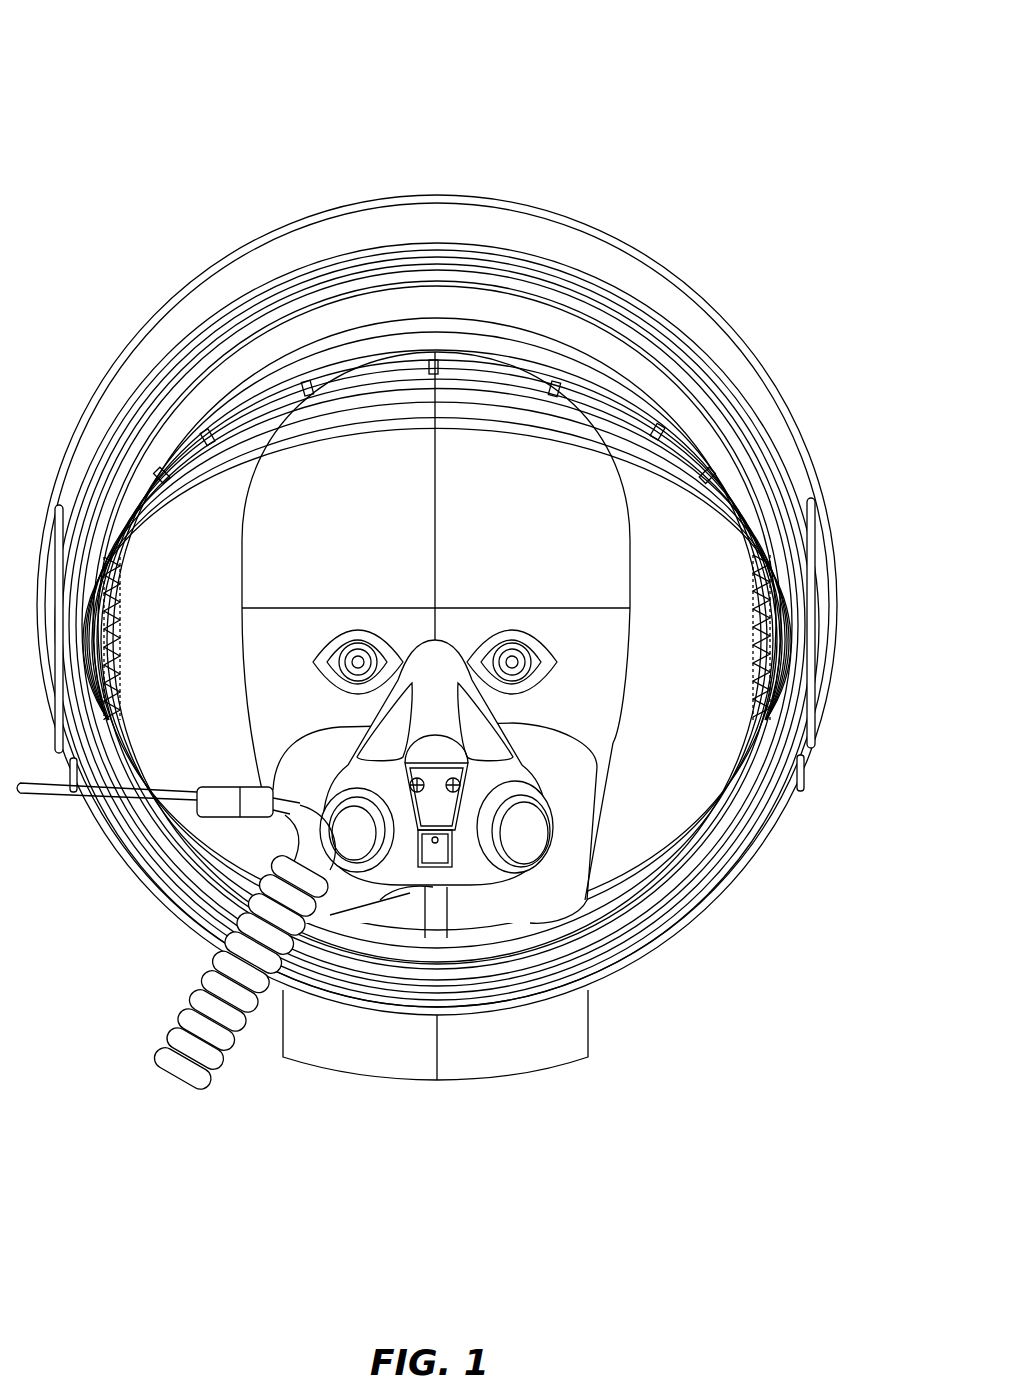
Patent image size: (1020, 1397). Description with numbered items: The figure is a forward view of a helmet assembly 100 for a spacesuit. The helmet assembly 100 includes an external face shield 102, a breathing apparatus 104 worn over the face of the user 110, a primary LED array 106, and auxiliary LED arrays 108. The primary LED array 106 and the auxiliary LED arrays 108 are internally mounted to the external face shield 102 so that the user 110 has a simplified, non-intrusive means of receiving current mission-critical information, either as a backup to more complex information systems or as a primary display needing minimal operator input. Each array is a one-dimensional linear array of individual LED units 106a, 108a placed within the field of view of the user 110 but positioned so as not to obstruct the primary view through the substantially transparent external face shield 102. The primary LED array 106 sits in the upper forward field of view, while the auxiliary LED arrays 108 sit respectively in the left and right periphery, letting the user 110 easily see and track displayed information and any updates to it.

The helmet assembly 100 is at (74, 70).
The external face shield 102 is at (658, 393).
The breathing apparatus 104 is at (520, 840).
The primary LED array 106 is at (250, 412).
The individual LED unit 106a is at (556, 386).
The auxiliary LED array 108 is at (768, 622).
The individual LED unit 108a is at (76, 505).
The user 110 is at (371, 491).